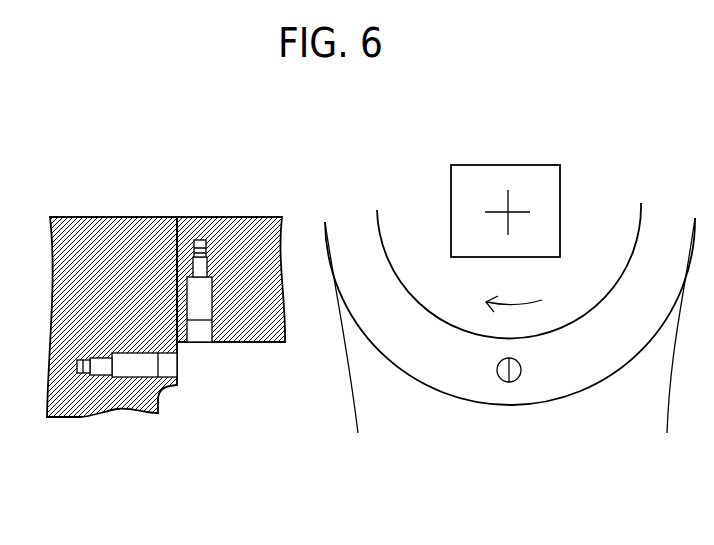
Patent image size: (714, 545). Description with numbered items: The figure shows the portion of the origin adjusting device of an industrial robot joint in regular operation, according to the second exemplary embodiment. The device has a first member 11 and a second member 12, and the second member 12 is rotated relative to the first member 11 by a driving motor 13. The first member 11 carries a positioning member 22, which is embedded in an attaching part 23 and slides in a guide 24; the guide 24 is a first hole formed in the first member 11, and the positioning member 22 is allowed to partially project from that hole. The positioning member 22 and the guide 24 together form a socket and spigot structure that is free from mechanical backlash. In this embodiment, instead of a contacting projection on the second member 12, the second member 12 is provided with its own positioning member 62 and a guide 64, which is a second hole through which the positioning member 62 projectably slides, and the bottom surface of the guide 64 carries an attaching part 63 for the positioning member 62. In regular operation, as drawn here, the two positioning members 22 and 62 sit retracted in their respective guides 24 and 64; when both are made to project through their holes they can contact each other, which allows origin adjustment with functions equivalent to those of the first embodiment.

The first member 11 is at (77, 392).
The second member 12 is at (265, 342).
The driving motor 13 is at (560, 200).
The positioning member 22 is at (142, 370).
The attaching part 23 is at (83, 357).
The guide 24 is at (135, 352).
The positioning member 62 is at (193, 307).
The attaching part 63 is at (217, 282).
The guide 64 is at (235, 242).